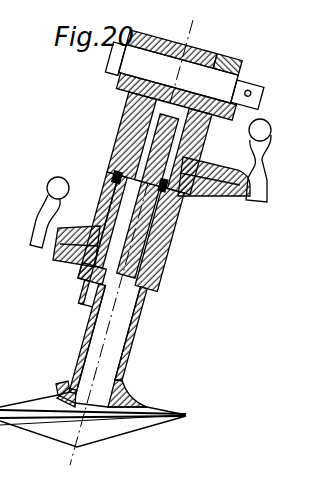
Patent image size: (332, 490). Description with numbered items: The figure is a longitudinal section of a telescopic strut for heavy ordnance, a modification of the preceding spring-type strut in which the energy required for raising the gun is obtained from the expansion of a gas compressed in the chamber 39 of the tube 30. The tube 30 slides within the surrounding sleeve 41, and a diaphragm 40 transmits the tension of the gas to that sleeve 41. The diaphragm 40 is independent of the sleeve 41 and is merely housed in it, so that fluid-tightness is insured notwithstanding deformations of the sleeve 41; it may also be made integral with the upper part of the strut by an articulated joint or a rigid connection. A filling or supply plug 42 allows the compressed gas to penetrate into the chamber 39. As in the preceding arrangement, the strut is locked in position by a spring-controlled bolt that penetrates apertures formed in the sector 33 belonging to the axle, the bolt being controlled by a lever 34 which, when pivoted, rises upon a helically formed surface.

The tube 30 is at (86, 333).
The sector 33 is at (34, 165).
The lever 34 is at (50, 207).
The chamber 39 is at (115, 333).
The diaphragm 40 is at (138, 260).
The sleeve 41 is at (167, 230).
The filling or supply plug 42 is at (57, 386).